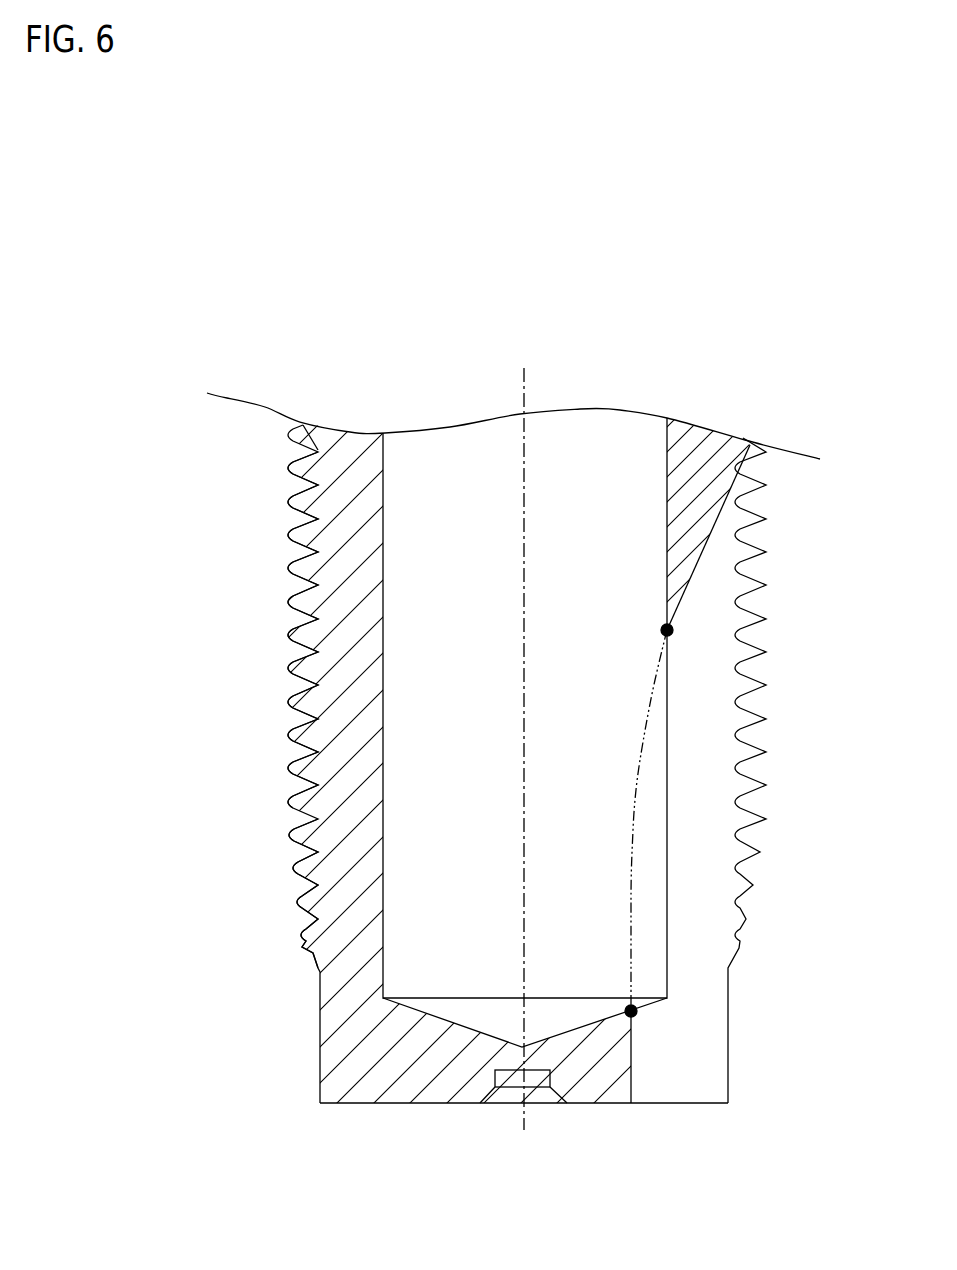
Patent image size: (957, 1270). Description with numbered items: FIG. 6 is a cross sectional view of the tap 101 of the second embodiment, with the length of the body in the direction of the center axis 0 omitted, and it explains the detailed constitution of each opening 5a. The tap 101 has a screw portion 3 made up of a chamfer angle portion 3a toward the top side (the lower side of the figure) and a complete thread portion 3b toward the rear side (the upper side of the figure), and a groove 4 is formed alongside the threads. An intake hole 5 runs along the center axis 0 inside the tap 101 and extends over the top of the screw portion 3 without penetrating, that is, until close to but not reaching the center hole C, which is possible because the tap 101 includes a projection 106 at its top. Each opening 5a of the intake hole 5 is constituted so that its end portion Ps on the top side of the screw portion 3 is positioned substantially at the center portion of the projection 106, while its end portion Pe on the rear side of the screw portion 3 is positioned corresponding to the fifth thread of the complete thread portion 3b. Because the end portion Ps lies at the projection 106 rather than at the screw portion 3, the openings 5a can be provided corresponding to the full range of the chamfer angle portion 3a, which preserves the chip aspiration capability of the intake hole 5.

The tap 101 is at (703, 278).
The screw portion 3 is at (233, 967).
The chamfer angle portion 3a is at (271, 805).
The complete thread portion 3b is at (263, 408).
The intake hole 5 is at (572, 425).
The center axis 0 is at (522, 392).
The groove 4 is at (697, 552).
The end portion of opening on rear side of screw portion Pe is at (661, 630).
The end portion of opening on top side of screw portion Ps is at (626, 1004).
The projection 106 is at (717, 1018).
The opening 5a is at (650, 985).
The center hole C is at (540, 1098).